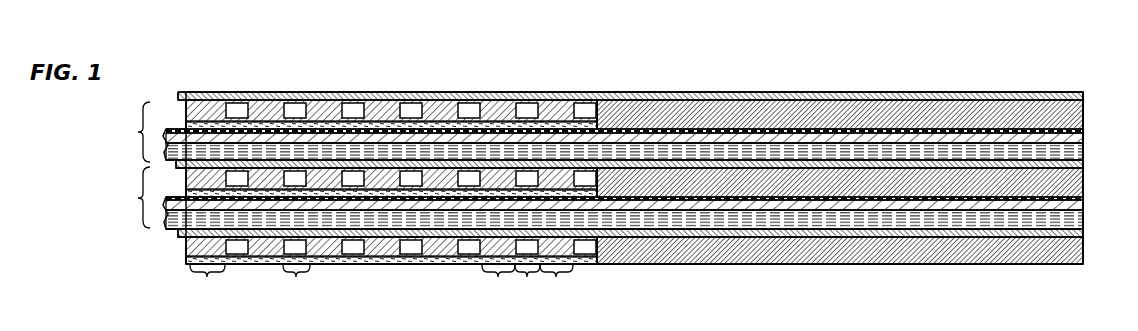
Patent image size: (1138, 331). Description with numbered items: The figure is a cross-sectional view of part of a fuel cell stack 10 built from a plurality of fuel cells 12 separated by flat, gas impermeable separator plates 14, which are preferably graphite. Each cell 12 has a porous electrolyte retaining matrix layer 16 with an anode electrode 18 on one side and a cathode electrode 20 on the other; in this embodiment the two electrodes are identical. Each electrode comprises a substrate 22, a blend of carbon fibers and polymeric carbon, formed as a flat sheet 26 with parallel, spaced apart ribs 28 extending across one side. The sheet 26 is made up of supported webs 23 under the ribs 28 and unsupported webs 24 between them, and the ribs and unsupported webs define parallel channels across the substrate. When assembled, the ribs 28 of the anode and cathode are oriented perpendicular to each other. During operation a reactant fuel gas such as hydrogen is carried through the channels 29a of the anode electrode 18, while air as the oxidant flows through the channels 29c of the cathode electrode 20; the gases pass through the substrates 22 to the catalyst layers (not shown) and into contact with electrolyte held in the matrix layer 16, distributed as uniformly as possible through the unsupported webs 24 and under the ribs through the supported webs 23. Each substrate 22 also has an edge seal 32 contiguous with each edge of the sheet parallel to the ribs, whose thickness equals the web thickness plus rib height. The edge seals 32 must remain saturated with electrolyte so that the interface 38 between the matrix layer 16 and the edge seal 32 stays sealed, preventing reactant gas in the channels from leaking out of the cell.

The fuel cell stack 10 is at (624, 150).
The fuel cell 12 is at (130, 165).
The separator plate 14 is at (1058, 99).
The matrix layer 16 is at (183, 130).
The anode electrode 18 is at (1110, 110).
The cathode electrode 20 is at (1110, 142).
The substrate 22 is at (190, 189).
The supported web 23 is at (382, 282).
The unsupported web 24 is at (413, 282).
The flat sheet 26 is at (968, 142).
The rib 28 is at (488, 101).
The anode channel 29a is at (588, 110).
The cathode channel 29c is at (915, 150).
The edge seal 32 is at (853, 183).
The interface 38 is at (1020, 130).